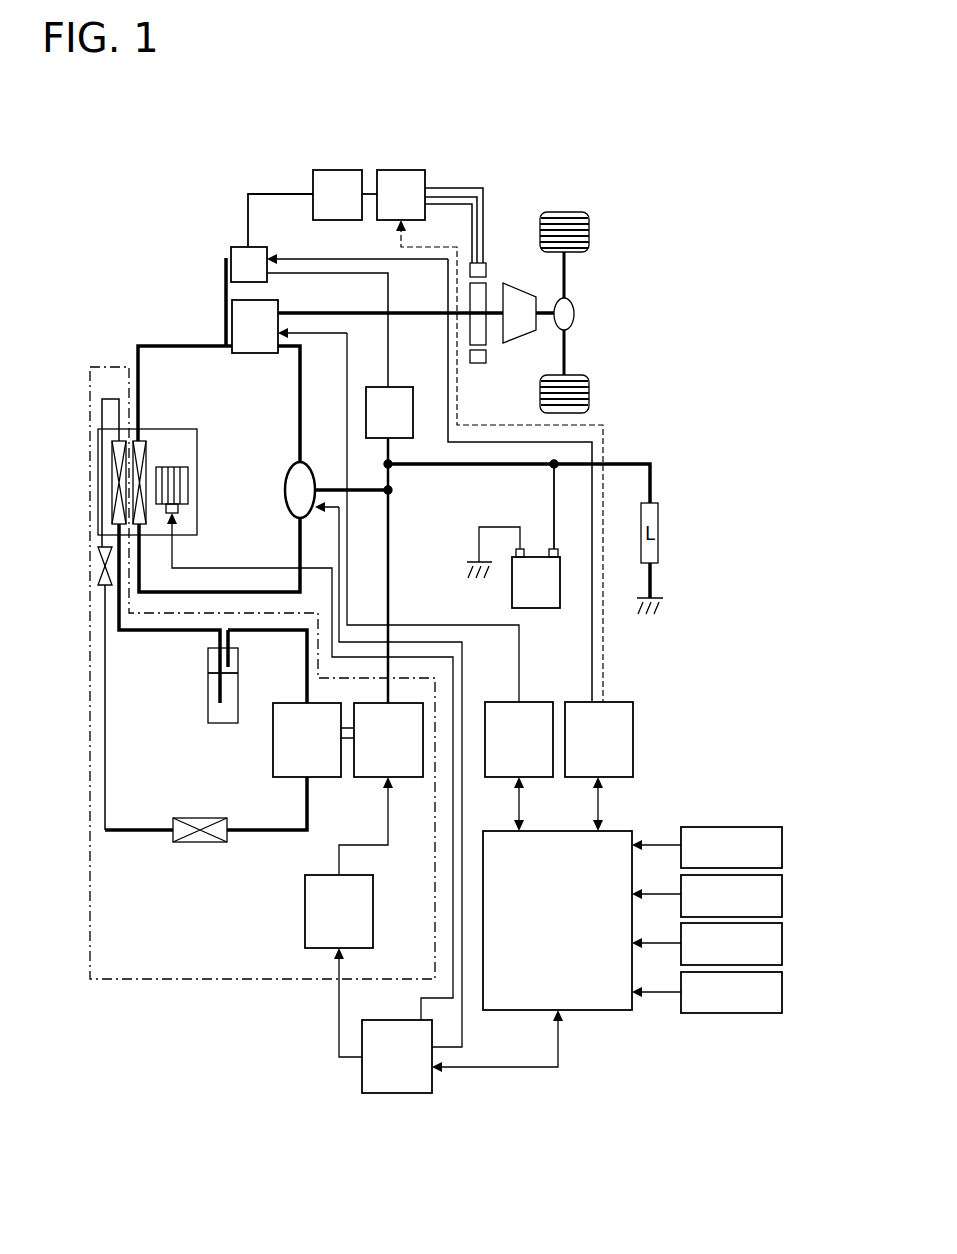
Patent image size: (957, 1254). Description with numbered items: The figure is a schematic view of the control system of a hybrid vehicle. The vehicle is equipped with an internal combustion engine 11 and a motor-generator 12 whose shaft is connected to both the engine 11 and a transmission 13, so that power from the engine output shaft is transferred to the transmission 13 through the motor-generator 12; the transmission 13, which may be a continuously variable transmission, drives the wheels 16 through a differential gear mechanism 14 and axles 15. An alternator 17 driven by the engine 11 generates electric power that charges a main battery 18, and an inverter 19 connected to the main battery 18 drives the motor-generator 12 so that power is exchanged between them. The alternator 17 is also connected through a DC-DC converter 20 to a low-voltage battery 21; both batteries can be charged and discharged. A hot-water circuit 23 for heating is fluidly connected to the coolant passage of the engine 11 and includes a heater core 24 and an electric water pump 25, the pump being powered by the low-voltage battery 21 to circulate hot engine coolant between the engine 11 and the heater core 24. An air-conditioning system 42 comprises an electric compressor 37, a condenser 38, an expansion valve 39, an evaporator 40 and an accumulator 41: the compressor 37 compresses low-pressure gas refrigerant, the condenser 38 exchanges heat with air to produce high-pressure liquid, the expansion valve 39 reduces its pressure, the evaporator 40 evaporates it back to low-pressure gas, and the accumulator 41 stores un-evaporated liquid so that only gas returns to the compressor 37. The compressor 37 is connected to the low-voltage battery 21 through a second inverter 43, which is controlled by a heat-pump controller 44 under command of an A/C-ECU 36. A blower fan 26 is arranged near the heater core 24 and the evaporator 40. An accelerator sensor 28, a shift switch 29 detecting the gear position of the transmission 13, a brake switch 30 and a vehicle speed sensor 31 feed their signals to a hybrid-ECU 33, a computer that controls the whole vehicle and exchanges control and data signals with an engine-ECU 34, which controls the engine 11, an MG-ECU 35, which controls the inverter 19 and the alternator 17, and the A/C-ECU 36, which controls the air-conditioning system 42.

The internal combustion engine 11 is at (270, 297).
The motor-generator 12 is at (489, 290).
The transmission 13 is at (521, 295).
The differential gear mechanism 14 is at (575, 312).
The axles 15 is at (566, 272).
The wheels 16 is at (562, 211).
The alternator 17 is at (237, 246).
The main battery 18 is at (344, 169).
The inverter 19 is at (404, 169).
The DC-DC converter 20 is at (408, 386).
The low-voltage battery 21 is at (530, 556).
The hot-water circuit 23 is at (175, 345).
The heater core 24 is at (151, 440).
The electric water pump 25 is at (288, 466).
The blower fan 26 is at (178, 467).
The accelerator sensor 28 is at (782, 846).
The shift switch 29 is at (782, 895).
The brake switch 30 is at (782, 944).
The vehicle speed sensor 31 is at (782, 993).
The hybrid-ECU 33 is at (603, 1012).
The engine-ECU 34 is at (540, 701).
The MG-ECU 35 is at (620, 701).
The A/C-ECU 36 is at (362, 1077).
The electric compressor 37 is at (327, 778).
The condenser 38 is at (202, 843).
The expansion valve 39 is at (98, 575).
The evaporator 40 is at (112, 478).
The accumulator 41 is at (208, 697).
The air-conditioning system 42 is at (155, 993).
The second inverter 43 is at (407, 778).
The heat-pump controller 44 is at (305, 906).